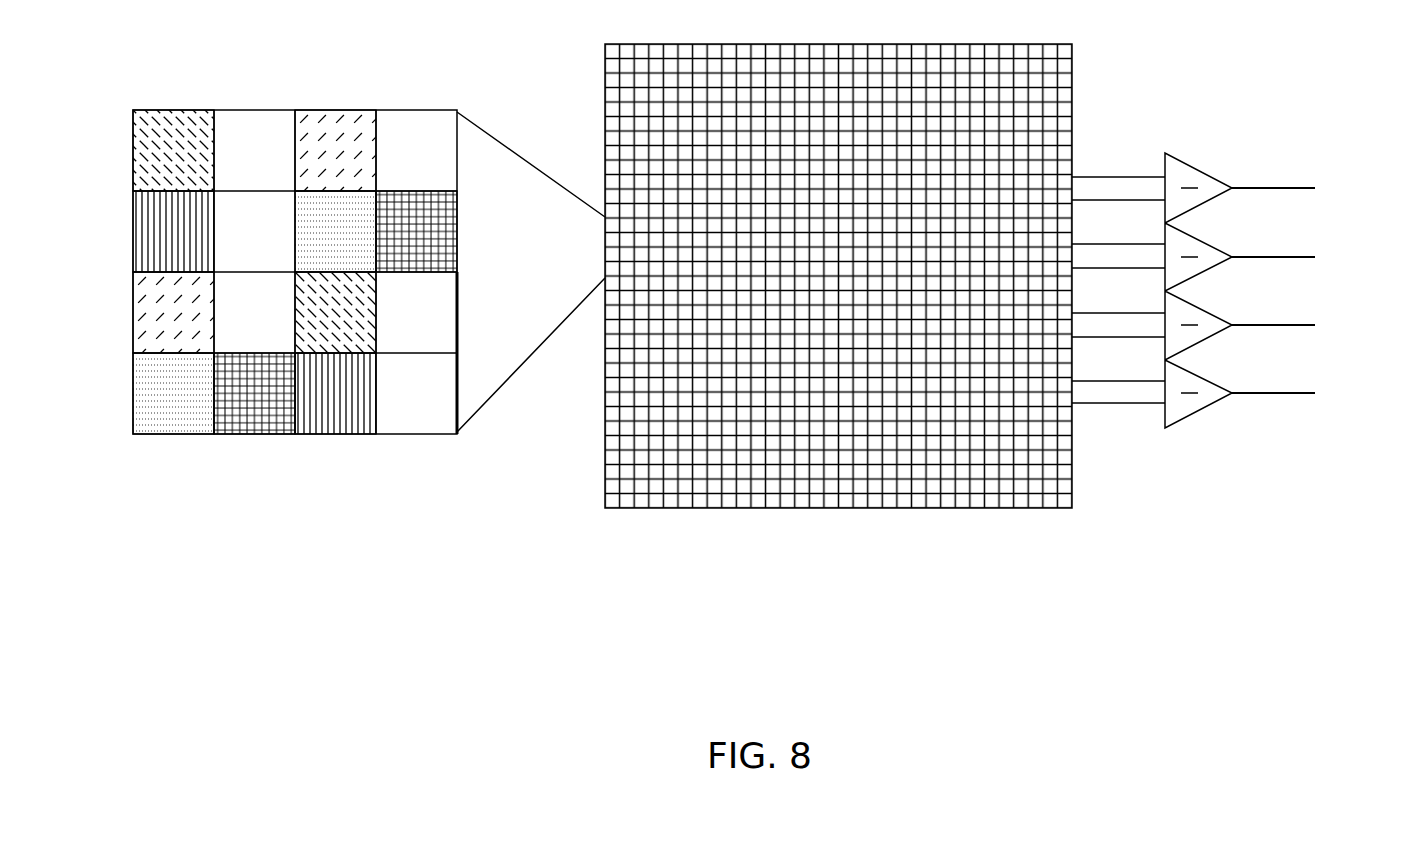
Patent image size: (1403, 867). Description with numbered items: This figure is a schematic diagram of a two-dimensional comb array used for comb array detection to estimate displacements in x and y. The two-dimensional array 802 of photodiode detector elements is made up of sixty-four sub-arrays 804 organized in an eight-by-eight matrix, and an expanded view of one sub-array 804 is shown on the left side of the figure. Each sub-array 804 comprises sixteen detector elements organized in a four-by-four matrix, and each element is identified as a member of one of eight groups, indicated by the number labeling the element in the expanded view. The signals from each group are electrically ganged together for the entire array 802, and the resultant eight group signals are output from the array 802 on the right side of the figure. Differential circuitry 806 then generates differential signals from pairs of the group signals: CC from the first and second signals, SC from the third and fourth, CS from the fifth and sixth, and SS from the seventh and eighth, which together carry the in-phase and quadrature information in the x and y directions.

The two-dimensional array 802 is at (817, 510).
The sub-array 804 is at (266, 434).
The differential circuitry 806 is at (1183, 160).